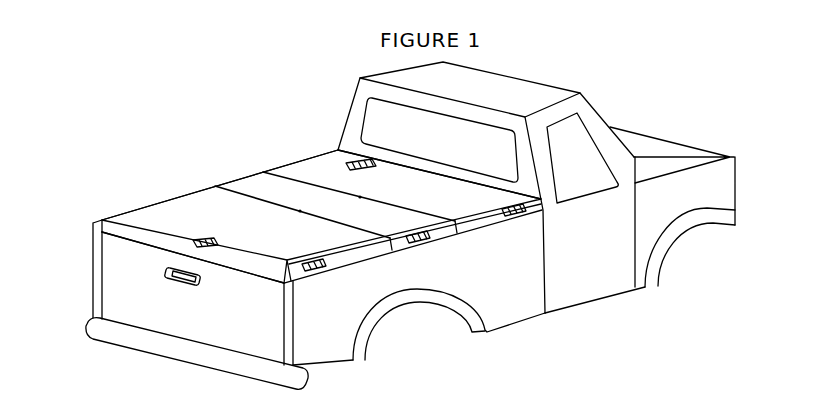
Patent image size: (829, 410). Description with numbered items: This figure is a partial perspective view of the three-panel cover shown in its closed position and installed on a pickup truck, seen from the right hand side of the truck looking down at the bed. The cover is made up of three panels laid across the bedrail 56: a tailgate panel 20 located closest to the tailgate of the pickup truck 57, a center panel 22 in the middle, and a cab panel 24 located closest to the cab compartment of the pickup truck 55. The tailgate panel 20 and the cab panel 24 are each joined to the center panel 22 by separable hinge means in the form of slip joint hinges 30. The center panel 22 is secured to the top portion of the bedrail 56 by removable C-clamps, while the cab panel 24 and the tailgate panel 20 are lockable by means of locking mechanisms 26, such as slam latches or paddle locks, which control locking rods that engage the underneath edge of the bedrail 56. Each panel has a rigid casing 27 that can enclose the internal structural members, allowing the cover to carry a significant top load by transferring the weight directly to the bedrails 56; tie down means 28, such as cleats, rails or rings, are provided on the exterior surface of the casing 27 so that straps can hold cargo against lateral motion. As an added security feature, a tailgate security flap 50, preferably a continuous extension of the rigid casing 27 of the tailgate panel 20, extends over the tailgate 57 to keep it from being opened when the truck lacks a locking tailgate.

The tailgate panel 20 is at (138, 207).
The center panel 22 is at (223, 184).
The cab panel 24 is at (327, 147).
The locking mechanism 26 is at (207, 237).
The rigid casing 27 is at (162, 217).
The tie down means 28 is at (102, 218).
The slip joint hinges 30 is at (284, 172).
The tailgate security flap 50 is at (123, 247).
The cab compartment of the pickup truck 55 is at (485, 88).
The bedrail 56 is at (452, 255).
The tailgate of the pickup truck 57 is at (122, 281).